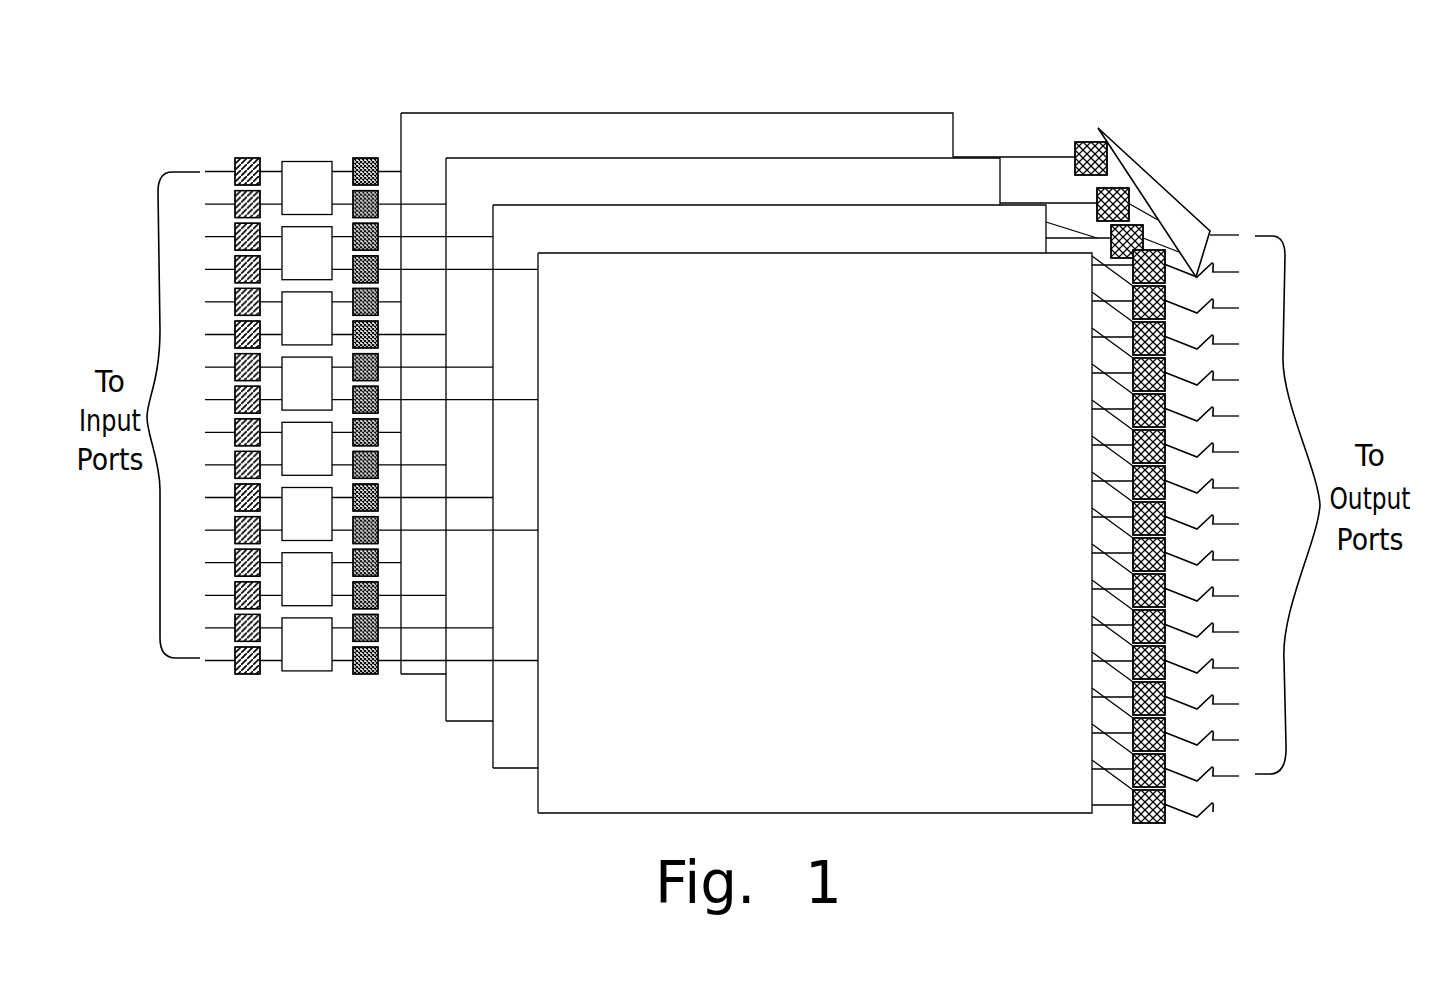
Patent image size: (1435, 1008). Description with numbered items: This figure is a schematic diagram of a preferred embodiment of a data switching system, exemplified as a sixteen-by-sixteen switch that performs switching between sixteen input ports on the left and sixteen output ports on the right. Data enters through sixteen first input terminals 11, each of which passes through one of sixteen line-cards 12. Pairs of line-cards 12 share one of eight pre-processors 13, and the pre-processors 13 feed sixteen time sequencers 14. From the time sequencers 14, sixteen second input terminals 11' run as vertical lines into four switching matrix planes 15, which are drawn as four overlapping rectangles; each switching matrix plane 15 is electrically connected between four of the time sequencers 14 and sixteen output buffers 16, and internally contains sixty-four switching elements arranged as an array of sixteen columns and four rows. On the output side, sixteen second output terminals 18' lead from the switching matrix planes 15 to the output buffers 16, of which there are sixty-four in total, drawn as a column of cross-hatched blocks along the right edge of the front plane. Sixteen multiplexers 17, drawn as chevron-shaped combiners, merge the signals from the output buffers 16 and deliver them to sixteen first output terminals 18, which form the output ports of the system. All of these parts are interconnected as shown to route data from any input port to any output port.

The first input terminals 11 is at (341, 382).
The line-cards 12 is at (248, 160).
The pre-processors 13 is at (305, 170).
The time sequencers 14 is at (368, 158).
The second input terminals 11' is at (461, 424).
The switching matrix planes 15 is at (645, 180).
The second output terminals 18' is at (1027, 422).
The output buffers 16 is at (1087, 140).
The multiplexers 17 is at (1160, 202).
The first output terminals 18 is at (1250, 469).